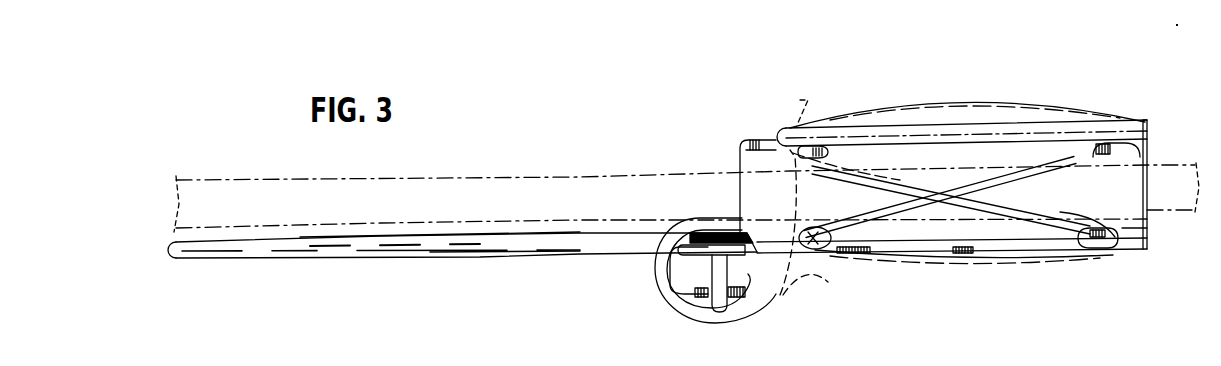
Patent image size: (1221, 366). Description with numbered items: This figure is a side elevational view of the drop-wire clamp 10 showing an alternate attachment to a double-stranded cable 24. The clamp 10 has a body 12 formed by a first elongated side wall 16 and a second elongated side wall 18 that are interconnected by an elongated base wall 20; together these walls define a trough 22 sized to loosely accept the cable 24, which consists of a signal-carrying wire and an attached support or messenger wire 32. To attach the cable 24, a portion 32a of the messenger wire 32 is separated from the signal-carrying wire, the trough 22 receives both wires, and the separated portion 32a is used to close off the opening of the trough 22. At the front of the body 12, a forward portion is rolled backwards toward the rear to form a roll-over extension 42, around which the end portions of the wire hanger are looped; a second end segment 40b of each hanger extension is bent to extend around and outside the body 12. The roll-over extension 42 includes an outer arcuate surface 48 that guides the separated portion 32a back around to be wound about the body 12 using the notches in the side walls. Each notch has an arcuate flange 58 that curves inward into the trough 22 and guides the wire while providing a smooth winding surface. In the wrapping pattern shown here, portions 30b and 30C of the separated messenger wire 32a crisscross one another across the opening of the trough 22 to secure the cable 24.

The clamp 10 is at (592, 143).
The body 12 is at (757, 133).
The first elongated side wall 16 is at (1003, 156).
The second elongated side wall 18 is at (907, 257).
The elongated base wall 20 is at (1145, 150).
The trough 22 is at (1133, 236).
The signal-carrying cable 24 is at (1167, 183).
The portion of the separated messenger wire 30C is at (898, 180).
The portion of the separated messenger wire 30b is at (1060, 130).
The messenger wire 32 is at (1190, 210).
The separated portion of the messenger wire 32a is at (745, 338).
The second end segment 40b is at (745, 308).
The roll-over extension 42 is at (686, 298).
The outer arcuate surface 48 is at (668, 280).
The arcuate flange 58 is at (825, 157).